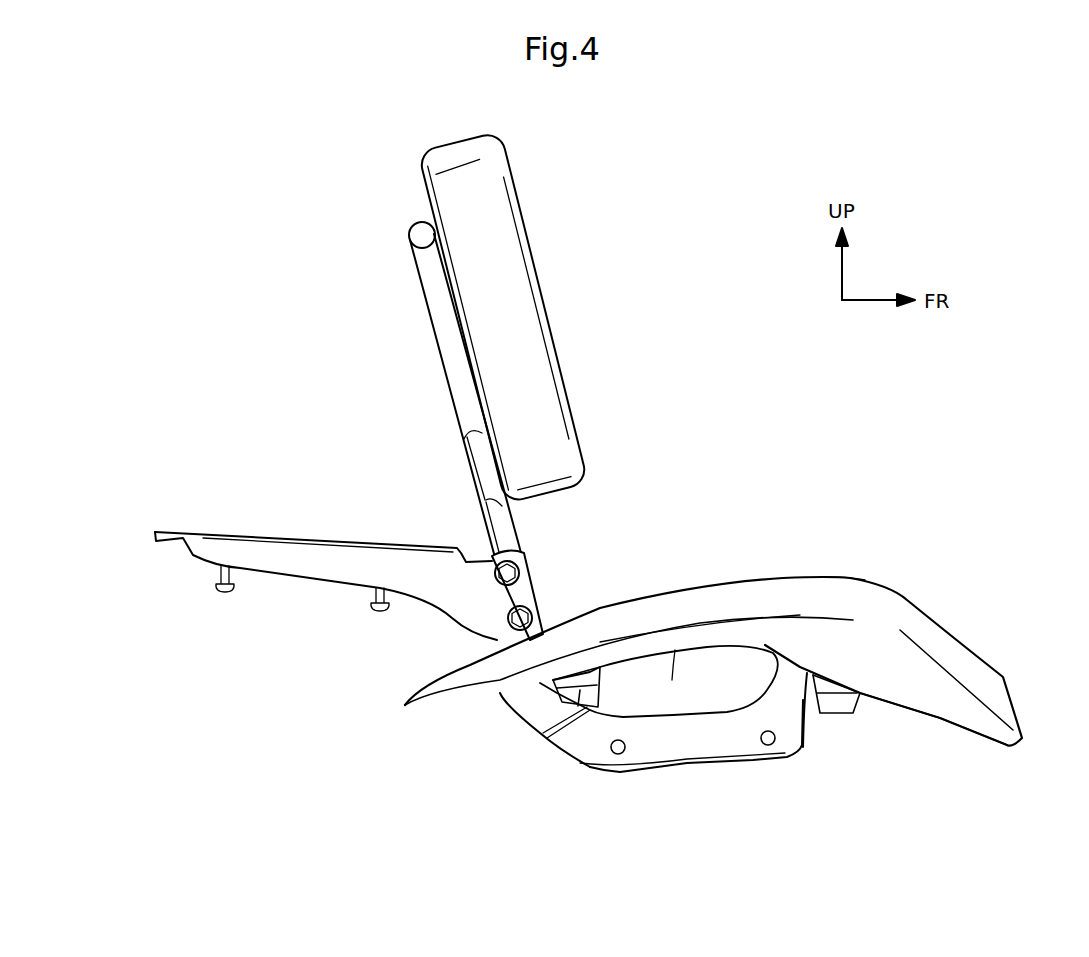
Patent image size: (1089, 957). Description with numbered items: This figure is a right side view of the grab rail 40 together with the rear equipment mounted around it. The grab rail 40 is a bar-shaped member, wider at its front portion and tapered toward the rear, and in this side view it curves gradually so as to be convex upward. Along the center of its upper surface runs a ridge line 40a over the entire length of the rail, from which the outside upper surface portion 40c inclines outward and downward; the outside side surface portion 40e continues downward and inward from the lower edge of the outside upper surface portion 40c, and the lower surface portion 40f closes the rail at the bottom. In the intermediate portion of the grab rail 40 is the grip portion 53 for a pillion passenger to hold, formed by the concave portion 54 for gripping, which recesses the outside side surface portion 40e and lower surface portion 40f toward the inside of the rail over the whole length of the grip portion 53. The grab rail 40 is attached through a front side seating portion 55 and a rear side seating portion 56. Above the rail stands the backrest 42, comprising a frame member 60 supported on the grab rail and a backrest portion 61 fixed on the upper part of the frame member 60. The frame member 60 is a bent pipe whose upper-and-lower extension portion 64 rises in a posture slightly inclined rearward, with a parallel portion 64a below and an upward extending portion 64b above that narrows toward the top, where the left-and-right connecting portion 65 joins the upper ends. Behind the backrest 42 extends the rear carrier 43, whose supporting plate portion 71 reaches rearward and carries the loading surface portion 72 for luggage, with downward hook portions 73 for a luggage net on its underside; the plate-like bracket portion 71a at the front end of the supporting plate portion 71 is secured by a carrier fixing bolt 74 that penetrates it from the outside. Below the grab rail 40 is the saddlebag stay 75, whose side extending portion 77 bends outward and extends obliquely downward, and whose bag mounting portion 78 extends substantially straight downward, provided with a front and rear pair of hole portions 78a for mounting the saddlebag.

The grab rail 40 is at (897, 558).
The ridge line 40a is at (780, 580).
The outside upper surface portion 40c is at (823, 583).
The outside side surface portion 40e is at (867, 663).
The lower surface portion 40f is at (910, 708).
The backrest 42 is at (404, 204).
The rear carrier 43 is at (224, 526).
The grip portion 53 is at (700, 595).
The concave portion for gripping 54 is at (672, 650).
The front side seating portion 55 is at (840, 712).
The rear side seating portion 56 is at (585, 708).
The frame member 60 is at (406, 277).
The backrest portion 61 is at (520, 214).
The upper-and-lower extension portion 64 is at (452, 403).
The parallel portion 64a is at (484, 520).
The upward extending portion 64b is at (466, 459).
The left-and-right connecting portion 65 is at (416, 232).
The supporting plate portion 71 is at (323, 566).
The plate-like bracket portion 71a is at (523, 593).
The loading surface portion 72 is at (316, 540).
The hook portion 73 is at (225, 591).
The carrier fixing bolt 74 is at (515, 565).
The saddlebag stay 75 is at (657, 780).
The side extending portion 77 is at (510, 700).
The bag mounting portion 78 is at (727, 748).
The hole portion 78a is at (618, 756).